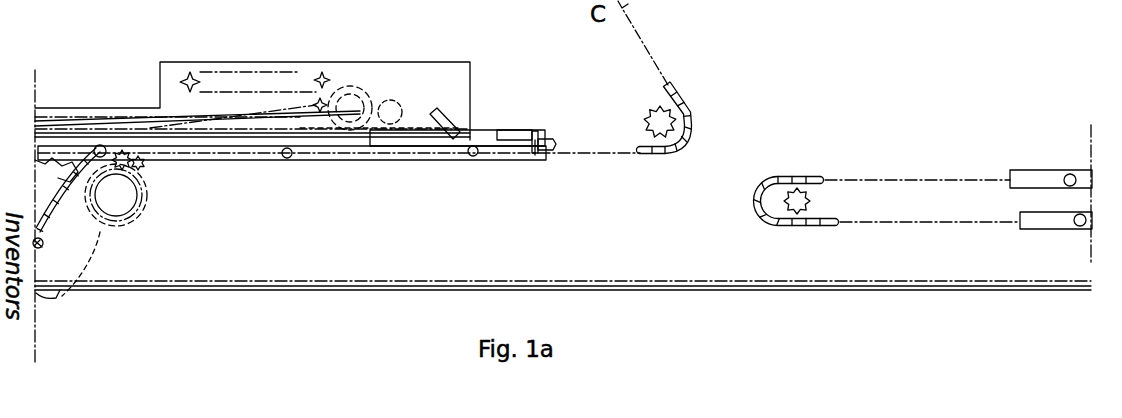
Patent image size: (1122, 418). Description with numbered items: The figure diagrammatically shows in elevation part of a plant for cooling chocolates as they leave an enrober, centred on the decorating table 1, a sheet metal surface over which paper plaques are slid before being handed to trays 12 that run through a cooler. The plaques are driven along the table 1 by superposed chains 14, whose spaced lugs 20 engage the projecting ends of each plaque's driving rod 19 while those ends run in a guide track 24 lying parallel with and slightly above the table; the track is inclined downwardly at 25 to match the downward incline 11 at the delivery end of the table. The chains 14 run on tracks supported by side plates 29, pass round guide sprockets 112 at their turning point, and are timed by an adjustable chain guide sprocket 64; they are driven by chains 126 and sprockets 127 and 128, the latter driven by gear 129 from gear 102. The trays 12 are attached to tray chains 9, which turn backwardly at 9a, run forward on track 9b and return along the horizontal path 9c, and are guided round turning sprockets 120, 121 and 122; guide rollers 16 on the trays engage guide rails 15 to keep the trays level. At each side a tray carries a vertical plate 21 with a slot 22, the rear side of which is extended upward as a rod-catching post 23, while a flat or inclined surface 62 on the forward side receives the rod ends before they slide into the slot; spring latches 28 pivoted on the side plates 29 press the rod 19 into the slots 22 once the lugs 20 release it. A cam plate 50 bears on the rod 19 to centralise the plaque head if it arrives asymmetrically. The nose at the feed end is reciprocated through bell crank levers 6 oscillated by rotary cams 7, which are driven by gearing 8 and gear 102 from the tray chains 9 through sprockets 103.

The decorating table 1 is at (40, 128).
The bell crank levers 6 is at (46, 74).
The rotary cams 7 is at (66, 294).
The gearing 8 is at (117, 236).
The tray chains 9 is at (673, 90).
The backward turn of chains 9a is at (940, 180).
The forward track 9b is at (928, 222).
The horizontal return path 9c is at (690, 280).
The downward incline 11 is at (278, 136).
The trays 12 is at (485, 153).
The superposed chains 14 is at (241, 72).
The guide rails 15 is at (888, 289).
The guide rollers 16 is at (1078, 157).
The driving rod 19 is at (536, 152).
The spaced lugs 20 is at (273, 76).
The vertical plates 21 is at (505, 129).
The slots 22 is at (543, 123).
The rod-catching post 23 is at (534, 130).
The guide track 24 is at (92, 126).
The inclined portion of track 25 is at (328, 130).
The spring latches 28 is at (458, 142).
The side plates 29 is at (470, 63).
The cam plate 50 is at (420, 142).
The inclined surface 62 is at (550, 140).
The chain guide sprocket 64 is at (316, 118).
The gear 102 is at (146, 215).
The sprockets 103 is at (73, 203).
The guide sprockets 112 is at (393, 113).
The turning sprocket 120 is at (50, 181).
The turning sprocket 121 is at (655, 118).
The turning sprocket 122 is at (790, 196).
The chains 126 is at (140, 165).
The sprocket 127 is at (346, 94).
The sprocket 128 is at (132, 150).
The gear 129 is at (118, 195).